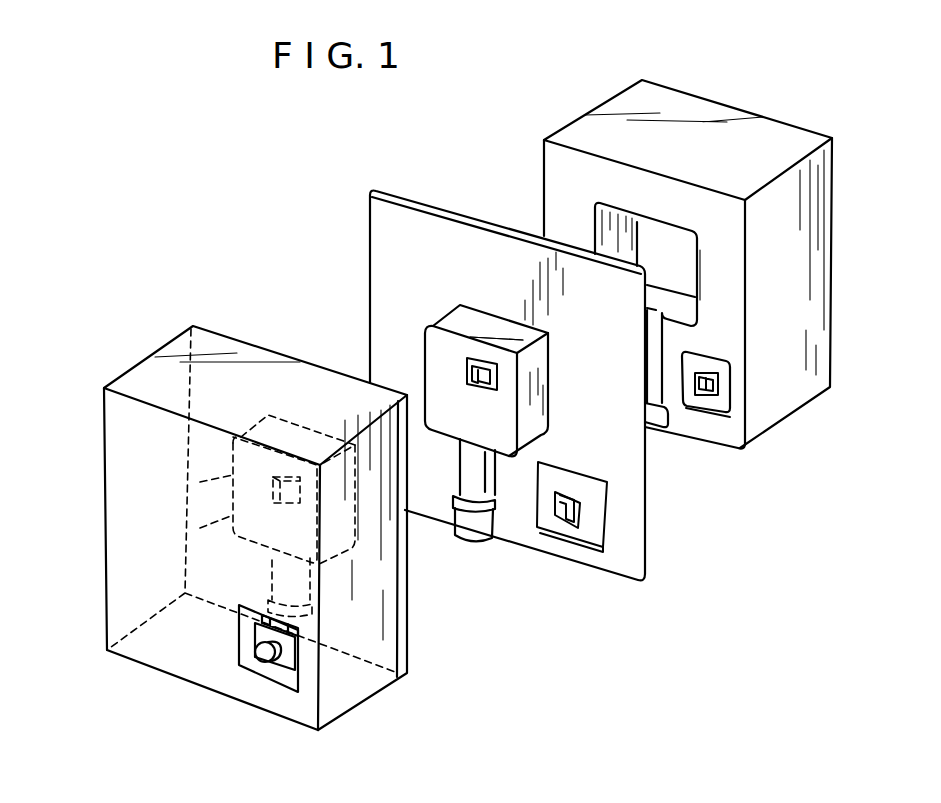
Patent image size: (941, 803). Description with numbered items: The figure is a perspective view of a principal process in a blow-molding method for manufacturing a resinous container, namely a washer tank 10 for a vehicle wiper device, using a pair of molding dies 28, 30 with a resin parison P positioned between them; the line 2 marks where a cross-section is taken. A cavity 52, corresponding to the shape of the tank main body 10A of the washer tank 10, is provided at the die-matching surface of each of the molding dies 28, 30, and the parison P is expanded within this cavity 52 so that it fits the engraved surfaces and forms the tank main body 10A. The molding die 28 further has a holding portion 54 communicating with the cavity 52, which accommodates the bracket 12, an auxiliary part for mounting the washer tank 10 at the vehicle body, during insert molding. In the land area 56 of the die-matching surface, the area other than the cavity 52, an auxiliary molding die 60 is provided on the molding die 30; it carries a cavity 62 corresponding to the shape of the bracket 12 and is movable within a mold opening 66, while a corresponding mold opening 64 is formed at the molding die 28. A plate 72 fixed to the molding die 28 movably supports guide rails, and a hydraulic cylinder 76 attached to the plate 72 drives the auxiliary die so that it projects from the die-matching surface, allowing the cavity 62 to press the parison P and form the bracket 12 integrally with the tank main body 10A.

The washer tank 10 is at (418, 317).
The tank main body 10A is at (435, 352).
The bracket 12 is at (468, 373).
The molding die 28 is at (130, 370).
The molding die 30 is at (604, 112).
The cavity 52 is at (247, 472).
The holding portion 54 is at (247, 510).
The land area 56 is at (737, 223).
The auxiliary molding die 60 is at (723, 385).
The cavity for molding an auxiliary part 62 is at (704, 390).
The mold opening 64 is at (283, 677).
The mold opening 66 is at (722, 420).
The plate 72 is at (283, 662).
The hydraulic cylinder 76 is at (258, 654).
The resin parison P is at (383, 188).
The line 2— 2 is at (495, 173).